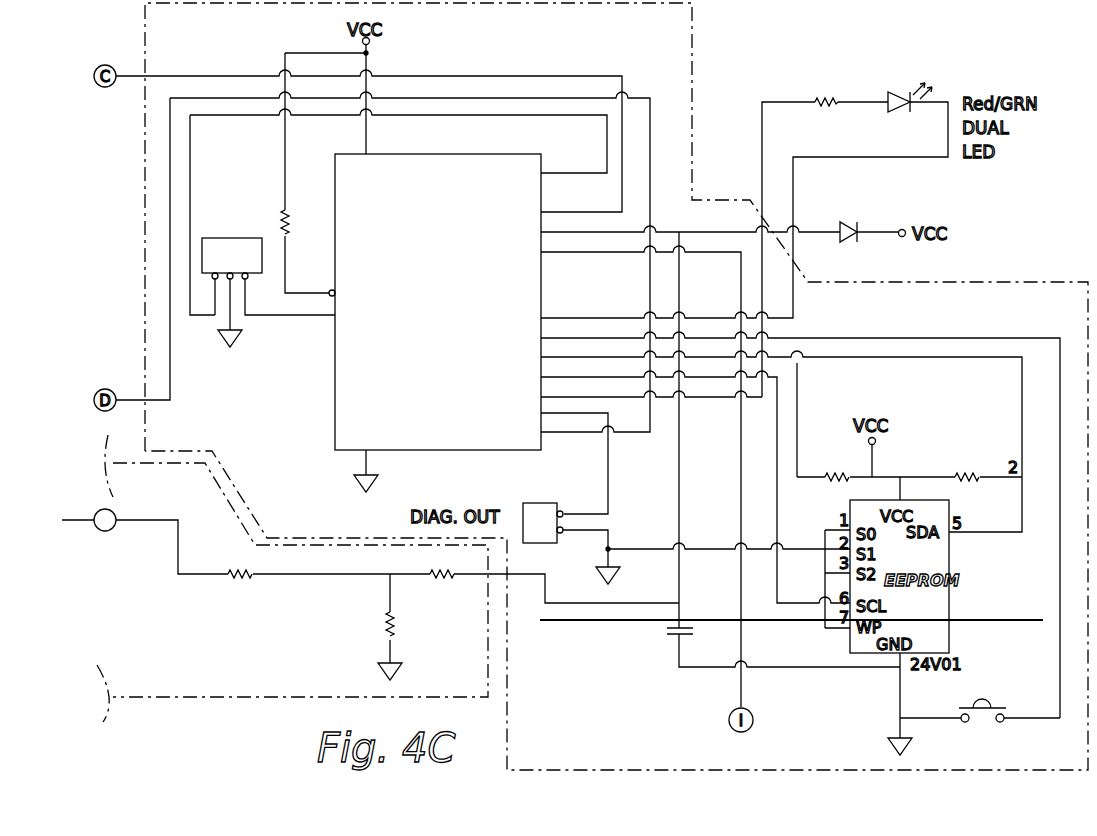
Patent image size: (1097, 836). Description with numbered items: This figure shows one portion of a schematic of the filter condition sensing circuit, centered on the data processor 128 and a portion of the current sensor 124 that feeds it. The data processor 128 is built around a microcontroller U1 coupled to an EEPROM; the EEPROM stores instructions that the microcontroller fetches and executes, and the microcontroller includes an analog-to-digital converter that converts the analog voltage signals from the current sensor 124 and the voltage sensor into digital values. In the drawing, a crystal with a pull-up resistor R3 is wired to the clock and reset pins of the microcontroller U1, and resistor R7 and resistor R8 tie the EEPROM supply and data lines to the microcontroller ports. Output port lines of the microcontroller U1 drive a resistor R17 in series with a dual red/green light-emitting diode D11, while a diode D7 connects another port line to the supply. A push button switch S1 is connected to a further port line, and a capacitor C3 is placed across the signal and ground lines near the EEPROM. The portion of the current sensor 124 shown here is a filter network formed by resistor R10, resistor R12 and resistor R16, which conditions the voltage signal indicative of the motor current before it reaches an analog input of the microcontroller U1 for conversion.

The data processor 128 is at (270, 386).
The current sensor 124 is at (370, 594).
The resistor R3 47K R3 is at (303, 202).
The microcontroller PIC16C711 U1 is at (450, 307).
The diode D7 is at (857, 216).
The red/green dual LED D11 is at (908, 89).
The resistor R17 22K R17 is at (823, 104).
The resistor R7 22K R7 is at (826, 477).
The resistor R8 3.3K R8 is at (977, 474).
The push button switch S1 is at (986, 712).
The capacitor C3 is at (645, 638).
The resistor R10 100K R10 is at (248, 581).
The resistor R12 1K R12 is at (449, 581).
The resistor R16 1M R16 is at (411, 636).